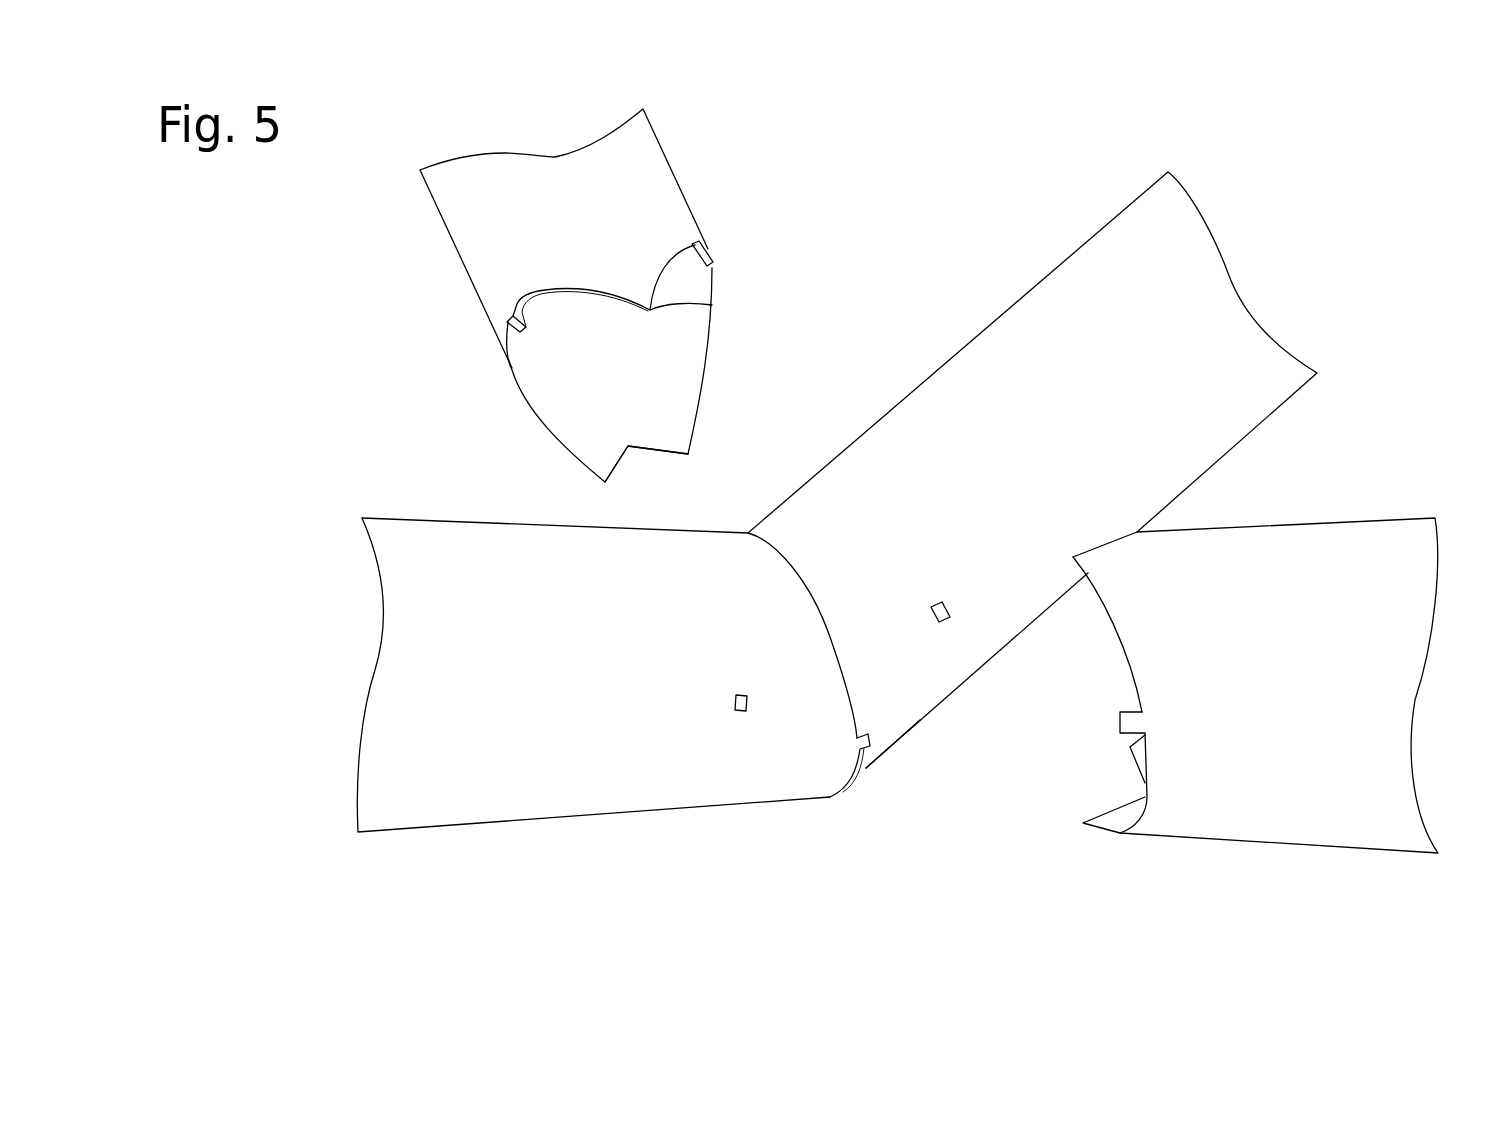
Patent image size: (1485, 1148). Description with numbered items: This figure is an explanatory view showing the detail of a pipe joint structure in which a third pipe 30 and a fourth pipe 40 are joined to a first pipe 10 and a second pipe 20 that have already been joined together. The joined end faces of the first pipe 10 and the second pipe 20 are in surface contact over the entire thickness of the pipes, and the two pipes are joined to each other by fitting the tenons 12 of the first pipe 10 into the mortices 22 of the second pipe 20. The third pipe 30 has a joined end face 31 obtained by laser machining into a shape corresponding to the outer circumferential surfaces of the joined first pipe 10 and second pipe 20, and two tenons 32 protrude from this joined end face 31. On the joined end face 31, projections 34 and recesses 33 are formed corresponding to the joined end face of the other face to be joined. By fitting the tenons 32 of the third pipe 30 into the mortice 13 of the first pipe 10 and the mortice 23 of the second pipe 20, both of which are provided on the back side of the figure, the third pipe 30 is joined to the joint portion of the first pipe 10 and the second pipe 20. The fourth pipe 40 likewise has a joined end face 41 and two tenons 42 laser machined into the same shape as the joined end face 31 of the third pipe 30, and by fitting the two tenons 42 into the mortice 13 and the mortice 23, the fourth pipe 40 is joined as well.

The first pipe 10 is at (520, 803).
The tenons 12 is at (862, 752).
The mortice 13 is at (740, 713).
The second pipe 20 is at (1073, 267).
The mortices 22 is at (888, 750).
The mortice 23 is at (942, 623).
The third pipe 30 is at (660, 167).
The joined end face 31 is at (710, 372).
The tenons 32 is at (714, 250).
The recesses 33 is at (633, 448).
The projections 34 is at (712, 305).
The fourth pipe 40 is at (1203, 815).
The joined end face 41 is at (1128, 657).
The tenons 42 is at (1130, 722).